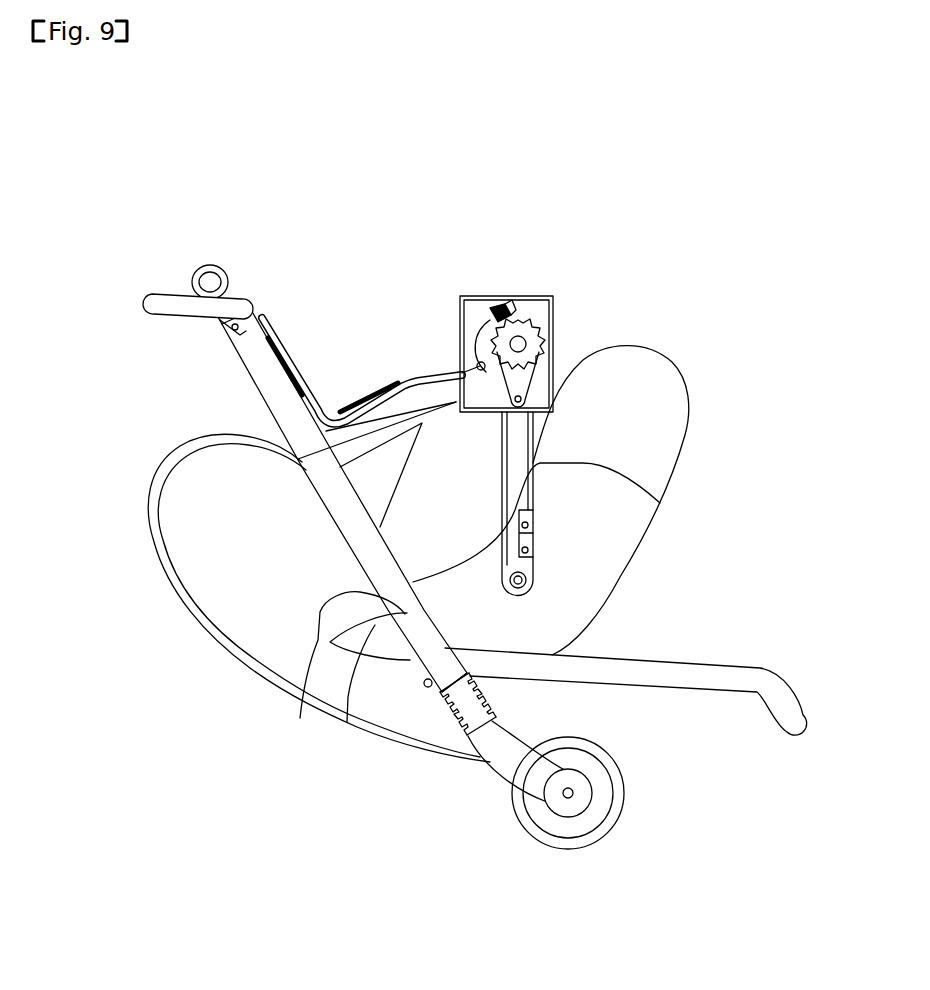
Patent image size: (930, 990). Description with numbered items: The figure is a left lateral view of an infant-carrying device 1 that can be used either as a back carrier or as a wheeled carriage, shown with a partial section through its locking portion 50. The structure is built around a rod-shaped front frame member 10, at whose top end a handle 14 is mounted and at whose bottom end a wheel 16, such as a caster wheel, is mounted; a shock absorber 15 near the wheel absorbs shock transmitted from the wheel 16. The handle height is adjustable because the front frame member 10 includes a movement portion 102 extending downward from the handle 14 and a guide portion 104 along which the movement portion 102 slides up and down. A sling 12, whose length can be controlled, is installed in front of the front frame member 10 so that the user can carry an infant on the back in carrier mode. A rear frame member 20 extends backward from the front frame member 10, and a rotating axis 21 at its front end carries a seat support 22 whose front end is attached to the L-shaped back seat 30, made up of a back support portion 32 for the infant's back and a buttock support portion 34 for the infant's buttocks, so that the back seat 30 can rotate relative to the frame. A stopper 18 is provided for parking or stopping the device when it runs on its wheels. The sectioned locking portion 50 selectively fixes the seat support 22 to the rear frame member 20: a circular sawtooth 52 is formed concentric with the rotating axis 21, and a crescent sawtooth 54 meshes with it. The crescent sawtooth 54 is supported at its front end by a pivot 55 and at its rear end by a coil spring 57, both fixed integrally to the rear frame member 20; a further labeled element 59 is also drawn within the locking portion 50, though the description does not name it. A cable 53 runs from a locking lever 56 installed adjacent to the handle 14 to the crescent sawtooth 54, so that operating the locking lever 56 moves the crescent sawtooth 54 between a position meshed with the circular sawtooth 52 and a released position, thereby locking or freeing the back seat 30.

The infant-carrying device 1 is at (422, 516).
The front frame member 10 is at (281, 550).
The sling 12 is at (225, 650).
The handle 14 is at (145, 298).
The shock absorber 15 is at (455, 727).
The wheel 16 is at (550, 840).
The stopper 18 is at (725, 677).
The rear frame member 20 is at (353, 437).
The rotating axis 21 is at (545, 322).
The seat support 22 is at (660, 503).
The back seat 30 is at (610, 449).
The back support portion 32 is at (683, 402).
The buttock support portion 34 is at (302, 697).
The locking portion 50 is at (505, 269).
The circular sawtooth 52 is at (527, 308).
The cable 53 is at (262, 318).
The crescent sawtooth 54 is at (463, 318).
The pivot 55 is at (527, 468).
The locking lever 56 is at (150, 302).
The coil spring 57 is at (502, 312).
The pawl 59 is at (493, 311).
The movement portion 102 is at (252, 360).
The guide portion 104 is at (347, 718).